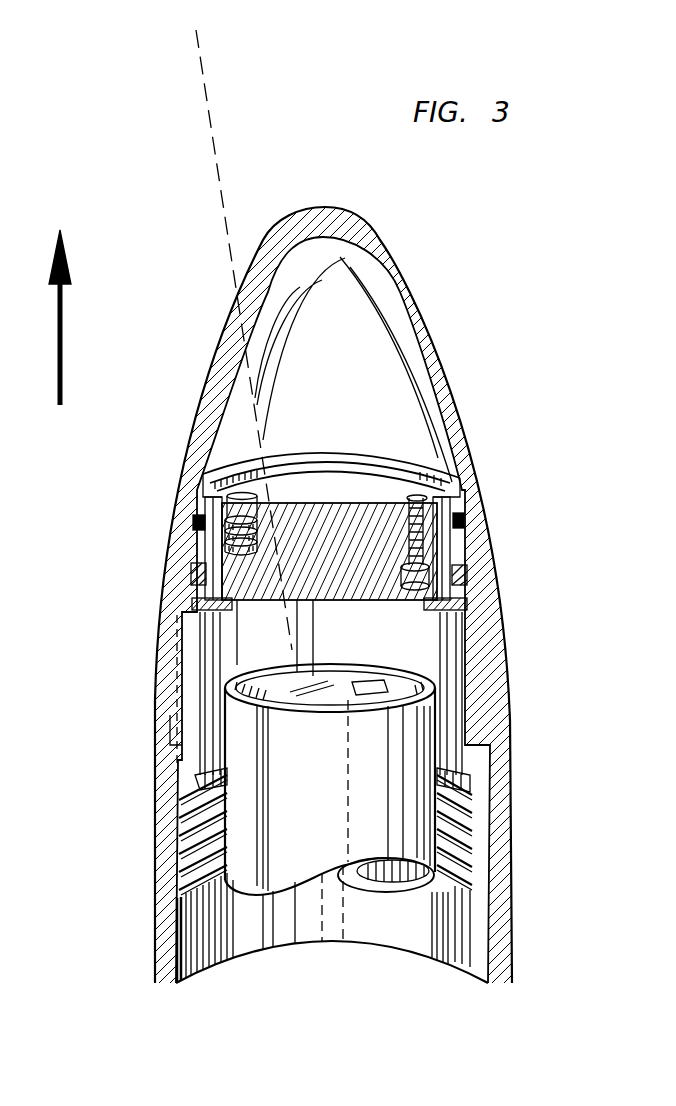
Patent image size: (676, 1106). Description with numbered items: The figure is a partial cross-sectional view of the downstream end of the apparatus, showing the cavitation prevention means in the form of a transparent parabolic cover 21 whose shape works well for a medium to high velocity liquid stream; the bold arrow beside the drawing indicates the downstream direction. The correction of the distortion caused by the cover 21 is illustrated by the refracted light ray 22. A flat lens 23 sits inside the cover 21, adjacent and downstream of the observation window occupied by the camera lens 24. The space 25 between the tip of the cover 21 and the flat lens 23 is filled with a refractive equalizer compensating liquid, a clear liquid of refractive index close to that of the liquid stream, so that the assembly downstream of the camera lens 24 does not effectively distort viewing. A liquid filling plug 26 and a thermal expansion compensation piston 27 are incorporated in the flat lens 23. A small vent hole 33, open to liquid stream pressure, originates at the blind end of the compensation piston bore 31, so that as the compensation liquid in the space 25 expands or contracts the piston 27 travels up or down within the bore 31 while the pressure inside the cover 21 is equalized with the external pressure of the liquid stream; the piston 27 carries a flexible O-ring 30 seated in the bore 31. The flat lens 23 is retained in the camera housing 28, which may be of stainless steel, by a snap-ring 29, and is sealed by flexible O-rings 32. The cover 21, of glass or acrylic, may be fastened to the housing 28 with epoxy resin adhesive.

The parabolic cover 21 is at (400, 283).
The refracted light ray 22 is at (212, 140).
The flat lens 23 is at (372, 600).
The camera lens 24 is at (250, 706).
The space 25 is at (398, 372).
The liquid filling plug 26 is at (465, 530).
The thermal expansion compensation piston 27 is at (248, 523).
The camera housing 28 is at (492, 777).
The snap-ring 29 is at (194, 617).
The flexible O-ring 30 is at (232, 538).
The compensation piston bore 31 is at (207, 553).
The flexible O-ring 32 is at (468, 577).
The vent hole 33 is at (157, 767).